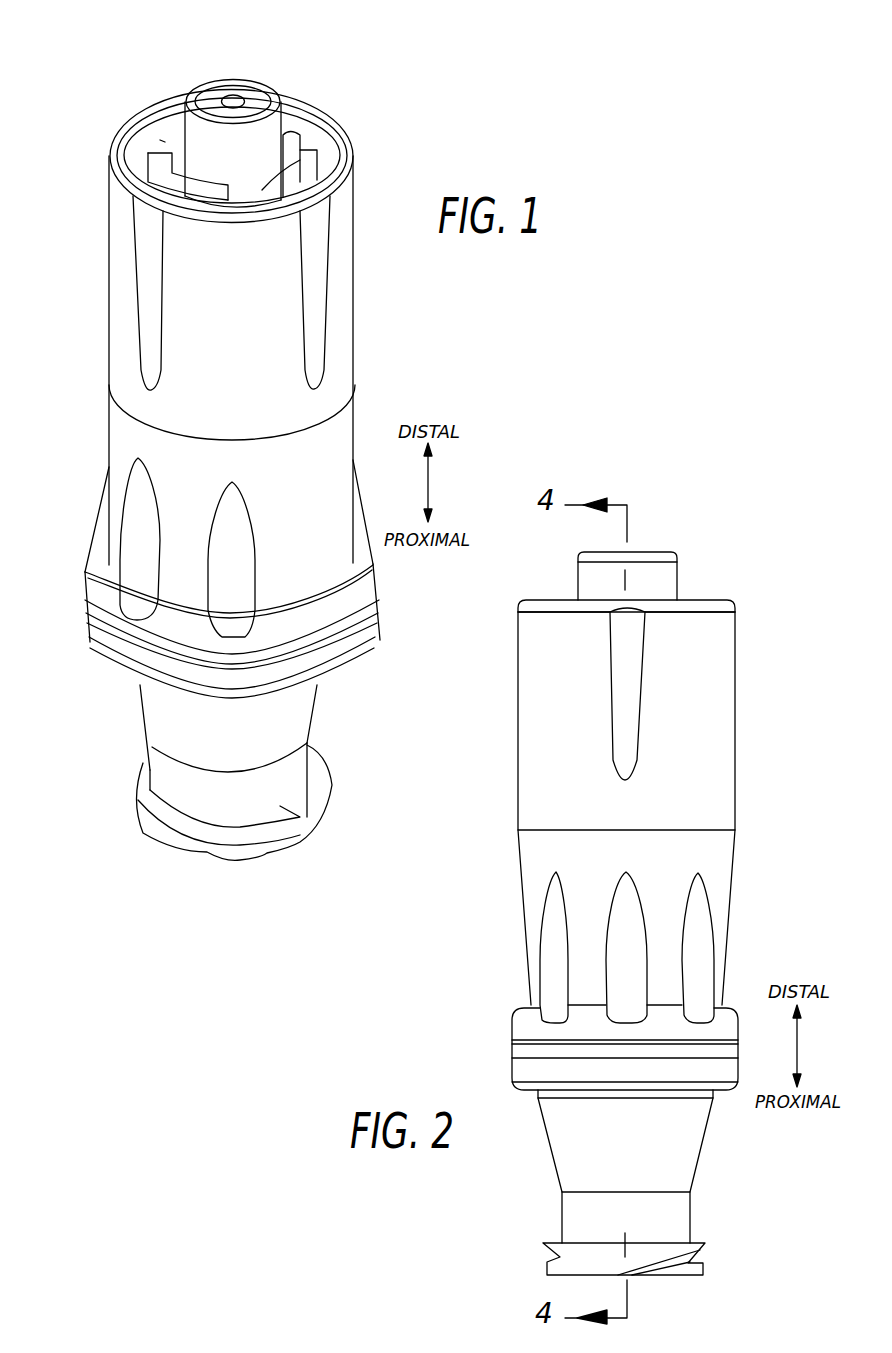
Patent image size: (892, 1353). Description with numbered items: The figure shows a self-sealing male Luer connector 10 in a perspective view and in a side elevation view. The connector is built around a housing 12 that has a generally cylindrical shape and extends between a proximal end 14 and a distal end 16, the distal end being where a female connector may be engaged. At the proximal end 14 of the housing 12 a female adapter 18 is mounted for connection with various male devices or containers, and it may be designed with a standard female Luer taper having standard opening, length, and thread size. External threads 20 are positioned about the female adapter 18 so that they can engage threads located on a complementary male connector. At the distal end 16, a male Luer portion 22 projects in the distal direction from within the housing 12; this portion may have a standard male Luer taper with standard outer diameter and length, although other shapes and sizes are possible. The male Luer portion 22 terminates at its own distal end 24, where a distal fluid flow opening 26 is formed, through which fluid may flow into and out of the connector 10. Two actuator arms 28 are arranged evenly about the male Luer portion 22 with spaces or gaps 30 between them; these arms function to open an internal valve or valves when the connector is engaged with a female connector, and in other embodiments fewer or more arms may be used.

In FIG. 1, the male Luer connector 10 is at (390, 358).
In FIG. 2, the male Luer connector 10 is at (495, 912).
In FIG. 1, the housing 12 is at (108, 352).
In FIG. 2, the housing 12 is at (710, 707).
In FIG. 1, the proximal end 14 is at (83, 607).
In FIG. 2, the proximal end 14 is at (520, 1040).
In FIG. 1, the distal end 16 is at (112, 165).
In FIG. 2, the distal end 16 is at (735, 608).
In FIG. 1, the female adapter 18 is at (180, 715).
In FIG. 2, the female adapter 18 is at (675, 1135).
In FIG. 1, the external threads 20 is at (167, 820).
In FIG. 2, the external threads 20 is at (700, 1258).
In FIG. 1, the male Luer portion 22 is at (283, 115).
In FIG. 2, the male Luer portion 22 is at (660, 583).
In FIG. 1, the distal end 24 is at (200, 110).
In FIG. 2, the distal end 24 is at (590, 557).
In FIG. 1, the distal fluid flow opening 26 is at (237, 94).
In FIG. 1, the actuator arms 28 is at (153, 167).
In FIG. 1, the gaps 30 is at (165, 142).